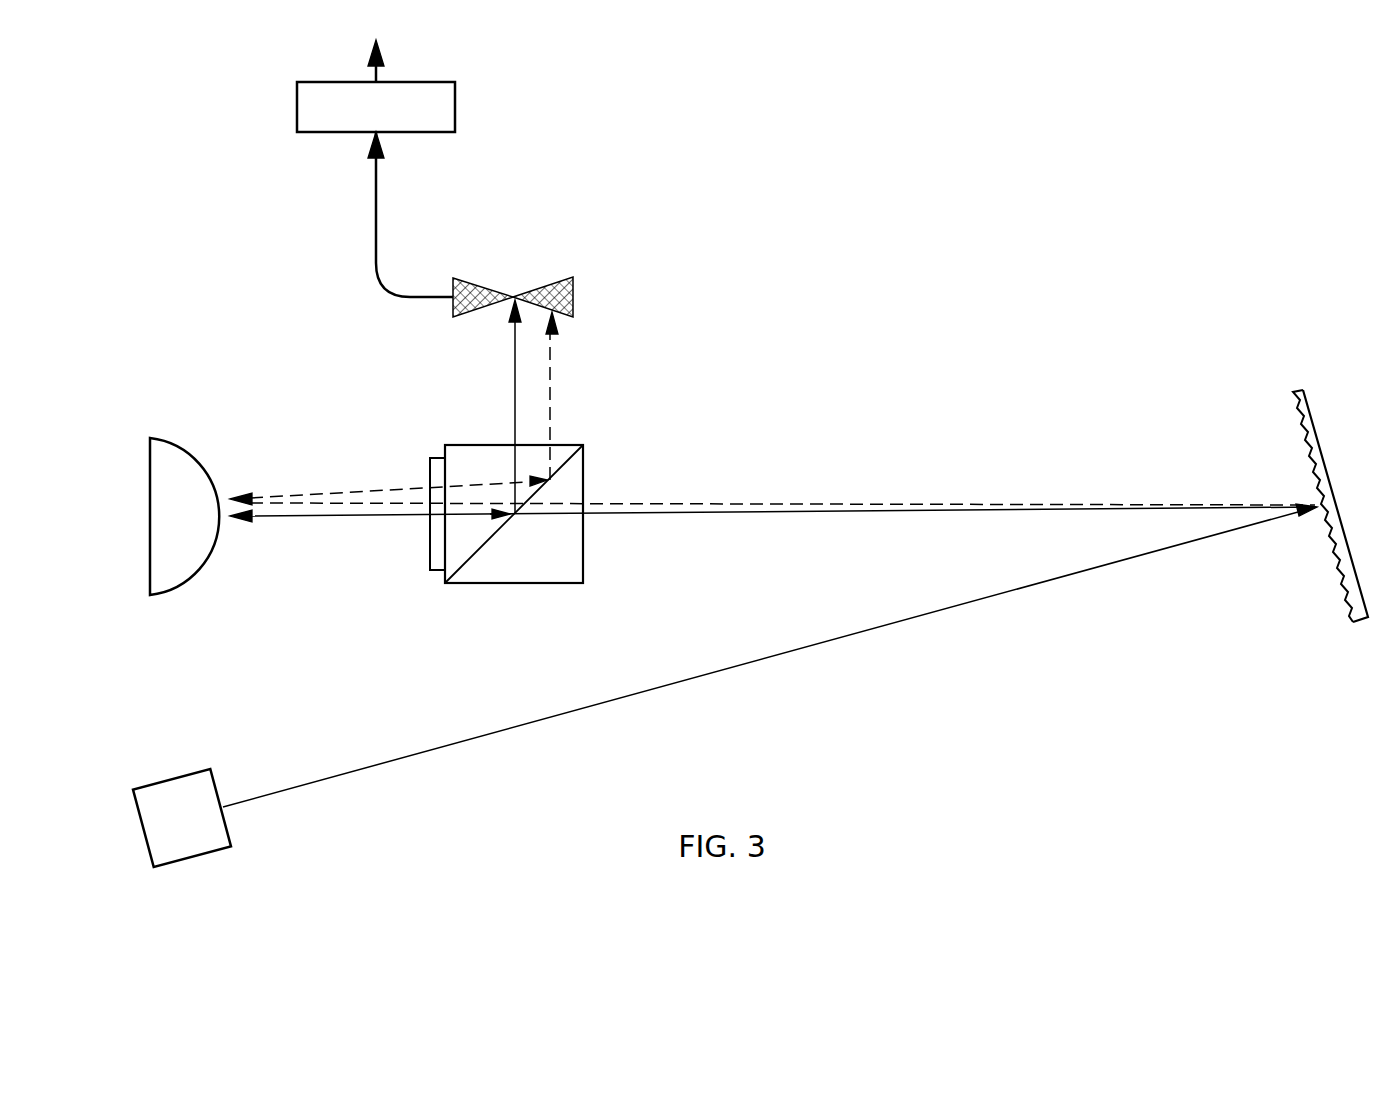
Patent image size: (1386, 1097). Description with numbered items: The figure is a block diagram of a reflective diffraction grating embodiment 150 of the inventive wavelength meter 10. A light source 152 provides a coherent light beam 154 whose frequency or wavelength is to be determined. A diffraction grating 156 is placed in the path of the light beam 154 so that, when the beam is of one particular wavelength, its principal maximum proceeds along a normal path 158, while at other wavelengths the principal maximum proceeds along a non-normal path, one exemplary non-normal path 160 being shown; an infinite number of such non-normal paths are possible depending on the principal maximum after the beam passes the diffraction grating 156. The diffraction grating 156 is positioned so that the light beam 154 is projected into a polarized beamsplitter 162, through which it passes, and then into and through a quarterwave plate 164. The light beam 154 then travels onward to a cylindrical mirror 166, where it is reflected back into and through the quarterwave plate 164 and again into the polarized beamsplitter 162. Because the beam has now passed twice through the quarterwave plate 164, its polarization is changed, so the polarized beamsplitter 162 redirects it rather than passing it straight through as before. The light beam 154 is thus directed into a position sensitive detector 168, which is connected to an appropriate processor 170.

The wavelength meter 10 is at (1177, 787).
The reflective diffraction grating embodiment 150 is at (1043, 273).
The light source 152 is at (192, 860).
The light beam 154 is at (692, 679).
The diffraction grating 156 is at (1293, 392).
The normal path 158 is at (277, 520).
The non-normal path 160 is at (307, 495).
The polarized beamsplitter 162 is at (565, 565).
The quarterwave plate 164 is at (428, 548).
The cylindrical mirror 166 is at (210, 528).
The position sensitive detector 168 is at (484, 287).
The processor 170 is at (455, 108).